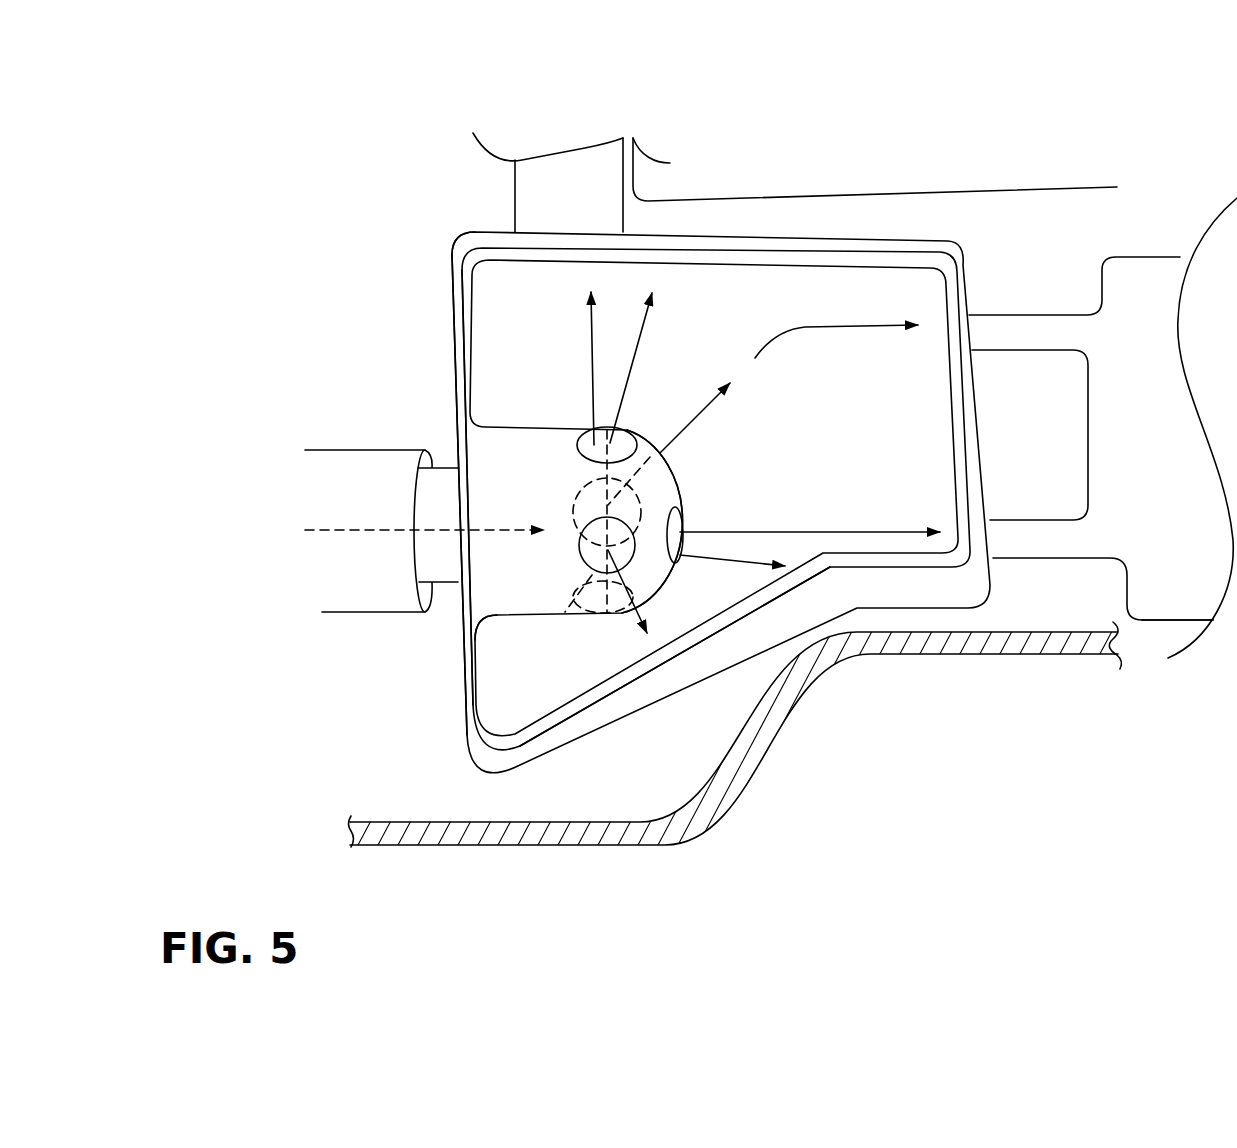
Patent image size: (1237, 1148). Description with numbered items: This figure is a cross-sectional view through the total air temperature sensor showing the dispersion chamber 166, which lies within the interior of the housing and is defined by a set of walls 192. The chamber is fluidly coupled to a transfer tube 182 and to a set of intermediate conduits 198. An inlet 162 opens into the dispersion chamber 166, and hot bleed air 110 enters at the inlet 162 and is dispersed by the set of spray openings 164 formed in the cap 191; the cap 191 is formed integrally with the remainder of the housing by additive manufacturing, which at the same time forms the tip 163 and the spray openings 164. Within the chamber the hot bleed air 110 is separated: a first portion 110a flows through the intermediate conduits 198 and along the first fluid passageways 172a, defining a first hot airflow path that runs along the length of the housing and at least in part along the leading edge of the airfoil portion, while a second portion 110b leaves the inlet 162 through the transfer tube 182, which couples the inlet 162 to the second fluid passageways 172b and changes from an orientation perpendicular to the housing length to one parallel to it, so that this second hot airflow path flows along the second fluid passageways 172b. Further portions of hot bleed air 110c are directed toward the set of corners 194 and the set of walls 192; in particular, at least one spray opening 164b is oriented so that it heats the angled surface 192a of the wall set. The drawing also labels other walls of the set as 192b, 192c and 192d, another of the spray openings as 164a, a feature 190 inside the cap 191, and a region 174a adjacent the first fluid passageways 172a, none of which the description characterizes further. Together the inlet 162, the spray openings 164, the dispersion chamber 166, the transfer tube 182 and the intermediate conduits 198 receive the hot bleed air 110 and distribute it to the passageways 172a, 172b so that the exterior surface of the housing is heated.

The hot bleed air 110 is at (357, 533).
The first portion of the hot bleed air 110a is at (847, 323).
The second portion of the hot bleed air 110b is at (587, 348).
The further portions of hot bleed air 110c is at (640, 338).
The inlet 162 is at (454, 638).
The tip 163 is at (522, 492).
The set of spray openings 164 is at (645, 540).
The plate stem 164a is at (688, 555).
The spray opening 164b is at (588, 547).
The dispersion chamber 166 is at (851, 464).
The first fluid passageways 172a is at (1144, 283).
The second fluid passageways 172b is at (588, 172).
The frame region 174a is at (1158, 456).
The transfer tube 182 is at (532, 185).
The ball joint 190 is at (563, 603).
The cap 191 is at (682, 488).
The set of walls 192 is at (718, 245).
The angled surface 192a is at (653, 655).
The housing side boss 192b is at (967, 458).
The housing top corner wall 192c is at (500, 255).
The housing left wall 192d is at (457, 388).
The set of corners 194 is at (658, 232).
The set of intermediate conduits 198 is at (1012, 325).